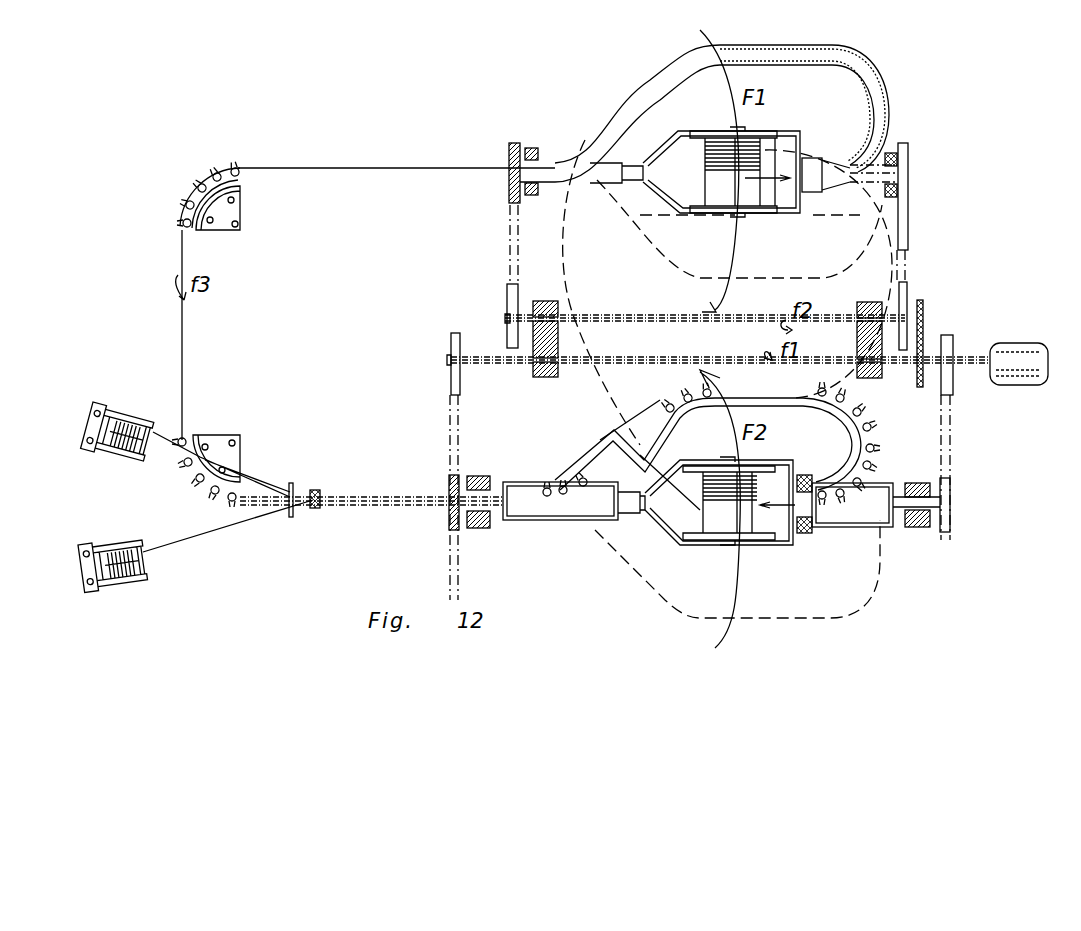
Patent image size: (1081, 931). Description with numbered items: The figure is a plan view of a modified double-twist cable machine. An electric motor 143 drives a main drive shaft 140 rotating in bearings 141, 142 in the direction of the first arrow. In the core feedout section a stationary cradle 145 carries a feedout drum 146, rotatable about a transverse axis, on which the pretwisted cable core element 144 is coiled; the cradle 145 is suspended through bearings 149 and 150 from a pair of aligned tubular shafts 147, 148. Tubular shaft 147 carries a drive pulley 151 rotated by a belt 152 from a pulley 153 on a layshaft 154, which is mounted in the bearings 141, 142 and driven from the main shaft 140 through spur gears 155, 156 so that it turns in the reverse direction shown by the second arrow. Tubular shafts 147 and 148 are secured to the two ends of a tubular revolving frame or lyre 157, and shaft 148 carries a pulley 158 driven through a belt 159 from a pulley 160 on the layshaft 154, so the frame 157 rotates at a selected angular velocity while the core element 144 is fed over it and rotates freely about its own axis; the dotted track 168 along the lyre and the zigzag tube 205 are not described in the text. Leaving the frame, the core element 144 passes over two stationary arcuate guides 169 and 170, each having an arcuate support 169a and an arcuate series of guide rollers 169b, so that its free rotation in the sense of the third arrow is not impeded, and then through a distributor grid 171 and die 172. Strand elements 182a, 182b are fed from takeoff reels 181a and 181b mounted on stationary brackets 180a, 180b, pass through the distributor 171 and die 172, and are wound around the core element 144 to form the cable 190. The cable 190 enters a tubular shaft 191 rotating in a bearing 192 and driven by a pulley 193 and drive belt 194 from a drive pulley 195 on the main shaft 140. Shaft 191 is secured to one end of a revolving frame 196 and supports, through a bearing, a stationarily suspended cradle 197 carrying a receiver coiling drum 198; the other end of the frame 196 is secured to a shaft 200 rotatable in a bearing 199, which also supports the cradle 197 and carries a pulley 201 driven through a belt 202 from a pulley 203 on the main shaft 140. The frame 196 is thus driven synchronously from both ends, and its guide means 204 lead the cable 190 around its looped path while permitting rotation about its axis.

The main drive shaft 140 is at (702, 372).
The bearing 141 is at (548, 377).
The bearing 142 is at (857, 338).
The electric motor 143 is at (1025, 343).
The pretwisted cable core element 144 is at (318, 153).
The stationary cradle 145 is at (668, 212).
The feedout drum 146 is at (755, 212).
The tubular shaft 147 is at (890, 178).
The tubular shaft 148 is at (530, 195).
The bearing 149 is at (898, 153).
The bearing 150 is at (538, 148).
The drive pulley 151 is at (908, 170).
The belt 152 is at (905, 253).
The pulley 153 is at (907, 290).
The layshaft 154 is at (630, 306).
The spur gear 155 is at (923, 312).
The spur gear 156 is at (953, 345).
The revolving frame or lyre 157 is at (875, 88).
The pulley 158 is at (520, 143).
The belt 159 is at (514, 244).
The pulley 160 is at (518, 303).
The chain 168 is at (758, 63).
The stationary arcuate guide 169 is at (171, 193).
The arcuate support 169a is at (242, 195).
The guide rollers 169b is at (232, 165).
The stationary arcuate guide 170 is at (205, 435).
The distributor grid 171 is at (290, 483).
The die 172 is at (312, 508).
The stationary bracket 180a is at (92, 452).
The stationary bracket 180b is at (108, 592).
The takeoff reel 181a is at (143, 425).
The takeoff reel 181b is at (152, 565).
The strand element 182a is at (165, 450).
The strand element 182b is at (168, 538).
The cable 190 is at (360, 500).
The tubular shaft 191 is at (500, 482).
The bearing 192 is at (480, 528).
The pulley 193 is at (460, 530).
The drive belt 194 is at (455, 436).
The drive pulley 195 is at (462, 340).
The revolving frame 196 is at (672, 426).
The cradle 197 is at (655, 538).
The receiver coiling drum 198 is at (752, 545).
The bearing 199 is at (925, 530).
The shaft 200 is at (903, 510).
The pulley 201 is at (950, 492).
The belt 202 is at (950, 448).
The pulley 203 is at (953, 385).
The guide means 204 is at (668, 405).
The guide tube 205 is at (605, 435).